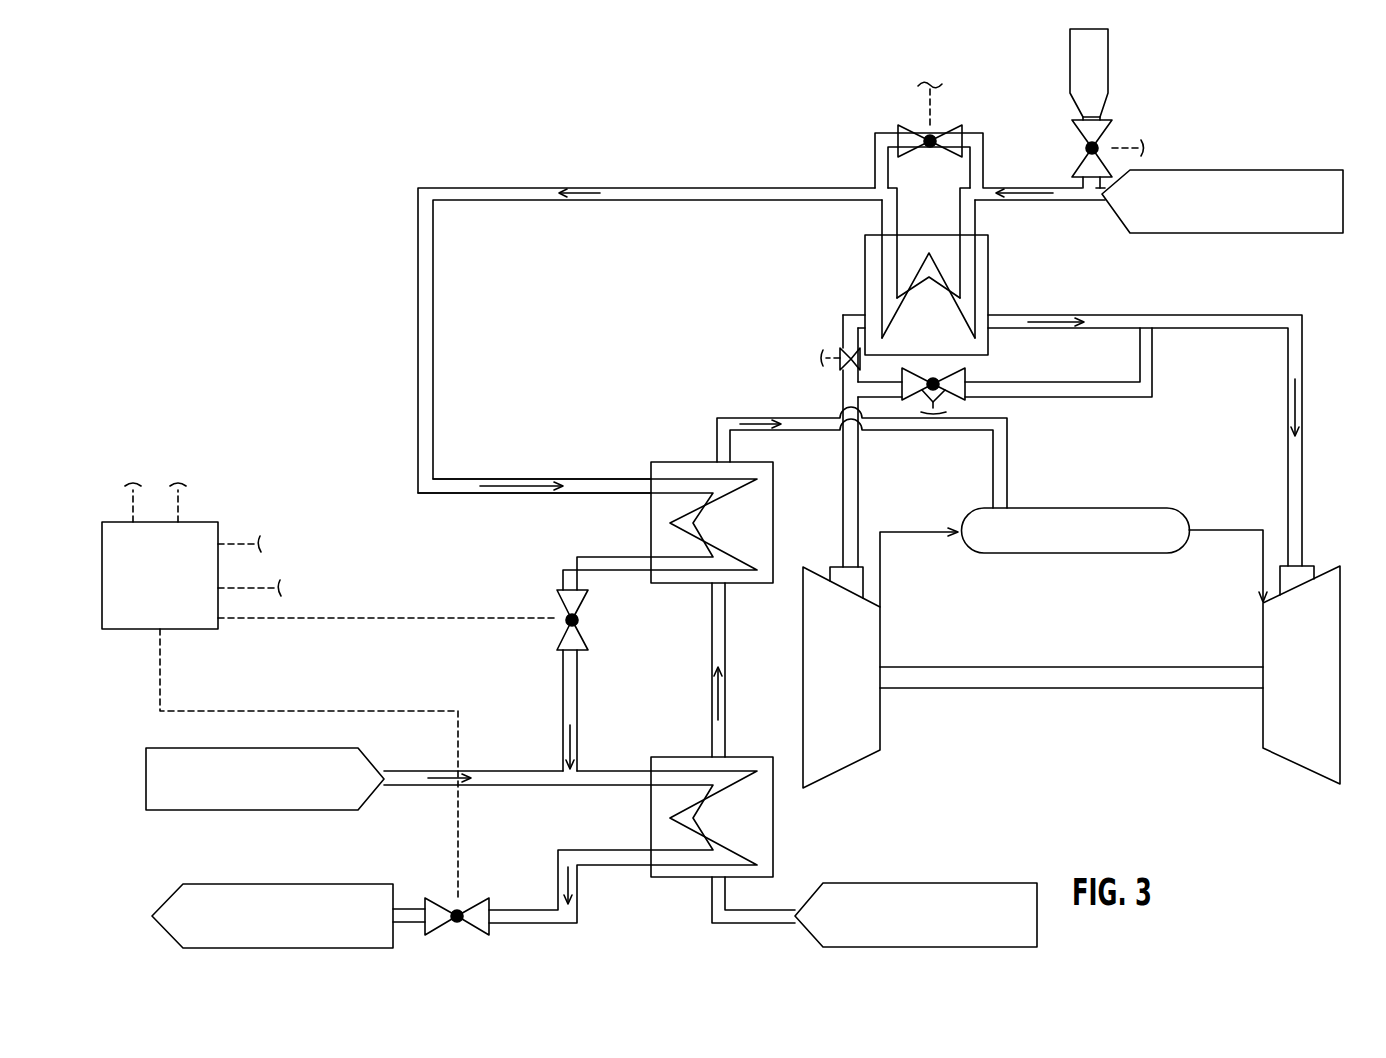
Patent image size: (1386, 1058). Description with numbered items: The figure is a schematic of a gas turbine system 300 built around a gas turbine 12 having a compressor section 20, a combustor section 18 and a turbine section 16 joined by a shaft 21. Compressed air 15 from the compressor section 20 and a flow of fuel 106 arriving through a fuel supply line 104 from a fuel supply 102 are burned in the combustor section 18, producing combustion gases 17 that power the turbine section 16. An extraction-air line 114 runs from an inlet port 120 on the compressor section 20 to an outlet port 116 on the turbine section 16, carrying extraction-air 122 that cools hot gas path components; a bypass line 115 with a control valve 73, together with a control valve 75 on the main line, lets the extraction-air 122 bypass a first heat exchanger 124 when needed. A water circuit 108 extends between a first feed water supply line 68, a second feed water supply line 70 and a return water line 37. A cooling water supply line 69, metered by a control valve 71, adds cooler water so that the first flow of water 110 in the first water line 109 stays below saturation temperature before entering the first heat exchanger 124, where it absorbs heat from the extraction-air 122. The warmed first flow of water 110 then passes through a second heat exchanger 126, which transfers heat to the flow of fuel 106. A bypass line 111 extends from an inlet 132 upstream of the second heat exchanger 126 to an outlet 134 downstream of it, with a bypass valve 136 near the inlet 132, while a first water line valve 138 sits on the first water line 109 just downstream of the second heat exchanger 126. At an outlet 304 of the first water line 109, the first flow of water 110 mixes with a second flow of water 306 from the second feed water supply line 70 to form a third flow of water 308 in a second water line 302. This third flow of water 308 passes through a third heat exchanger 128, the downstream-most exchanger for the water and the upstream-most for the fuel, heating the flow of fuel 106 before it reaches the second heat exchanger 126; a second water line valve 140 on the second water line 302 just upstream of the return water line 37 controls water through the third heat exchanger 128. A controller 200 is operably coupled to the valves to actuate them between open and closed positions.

The gas turbine 12 is at (1212, 494).
The compressed air 15 is at (881, 570).
The turbine section 16 is at (1286, 696).
The combustion gases 17 is at (1246, 533).
The combustor section 18 is at (1102, 508).
The compressor section 20 is at (828, 688).
The shaft 21 is at (803, 640).
The return water line 37 is at (263, 932).
The first feed water supply line 68 is at (1208, 219).
The cooling water supply line 69 is at (1077, 73).
The second feed water supply line 70 is at (253, 795).
The control valve 71 is at (1104, 126).
The control valve 73 is at (944, 392).
The control valve 75 is at (843, 348).
The fuel supply 102 is at (903, 932).
The fuel supply line 104 is at (716, 420).
The flow of fuel 106 is at (746, 424).
The water circuit 108 is at (382, 163).
The first water line 109 is at (708, 188).
The first flow of water 110 is at (585, 188).
The bypass line 111 is at (984, 154).
The extraction-air line 114 is at (1120, 315).
The bypass line 115 is at (1153, 353).
The outlet port 116 is at (1310, 564).
The inlet port 120 is at (836, 567).
The extraction-air 122 is at (1055, 329).
The first heat exchanger 124 is at (865, 274).
The second heat exchanger 126 is at (690, 462).
The third heat exchanger 128 is at (773, 820).
The inlet 132 is at (968, 188).
The outlet 134 is at (873, 188).
The bypass valve 136 is at (953, 127).
The first water line valve 138 is at (589, 611).
The second water line valve 140 is at (470, 900).
The controller 200 is at (143, 592).
The gas turbine system 300 is at (300, 128).
The second water line 302 is at (446, 771).
The outlet 304 is at (563, 768).
The second flow of water 306 is at (455, 787).
The third flow of water 308 is at (576, 886).